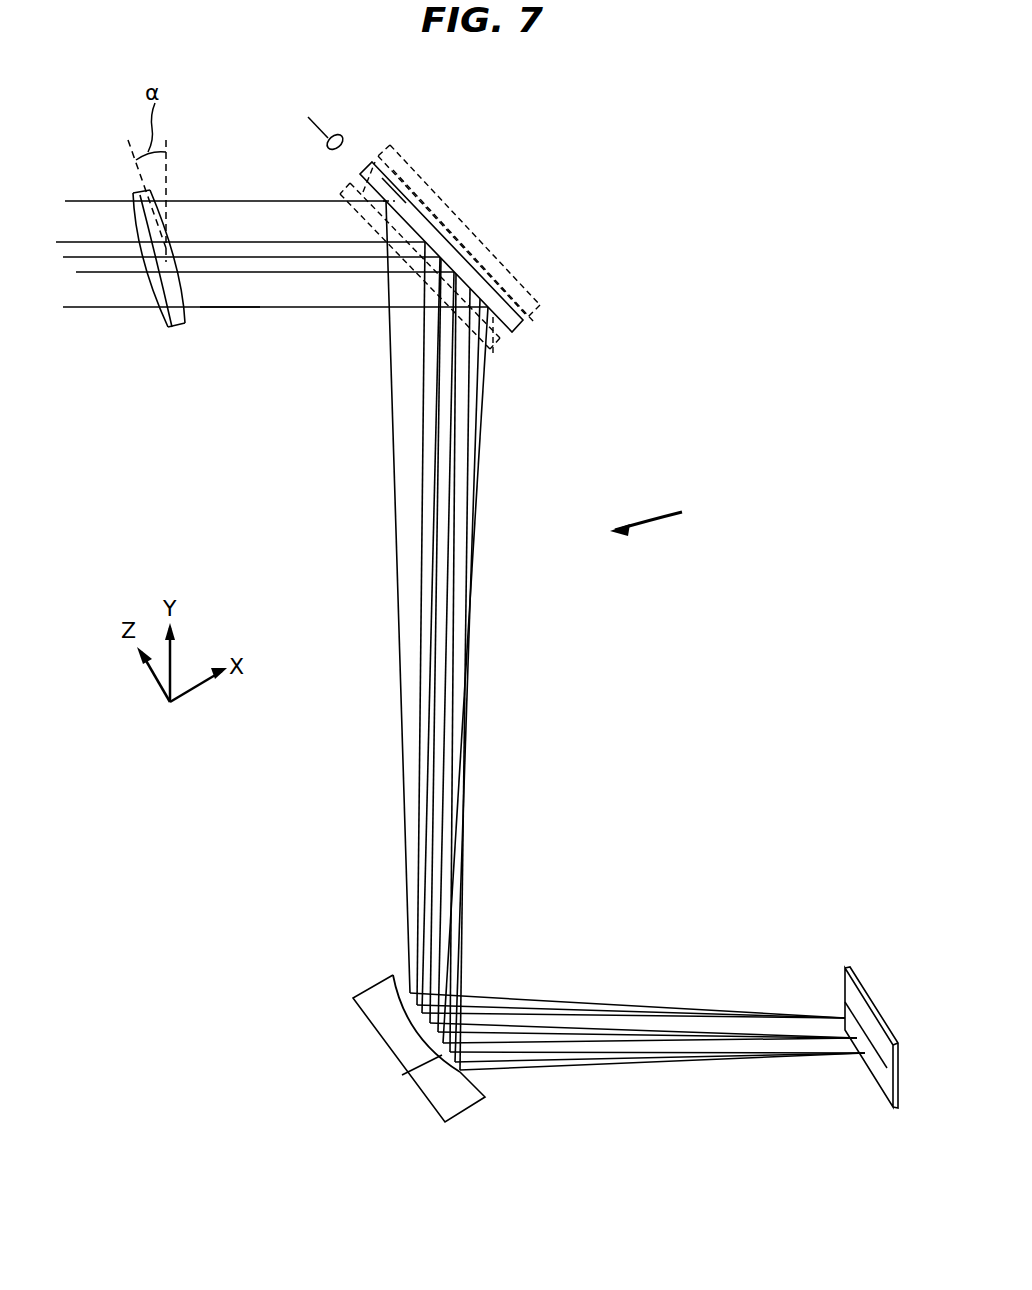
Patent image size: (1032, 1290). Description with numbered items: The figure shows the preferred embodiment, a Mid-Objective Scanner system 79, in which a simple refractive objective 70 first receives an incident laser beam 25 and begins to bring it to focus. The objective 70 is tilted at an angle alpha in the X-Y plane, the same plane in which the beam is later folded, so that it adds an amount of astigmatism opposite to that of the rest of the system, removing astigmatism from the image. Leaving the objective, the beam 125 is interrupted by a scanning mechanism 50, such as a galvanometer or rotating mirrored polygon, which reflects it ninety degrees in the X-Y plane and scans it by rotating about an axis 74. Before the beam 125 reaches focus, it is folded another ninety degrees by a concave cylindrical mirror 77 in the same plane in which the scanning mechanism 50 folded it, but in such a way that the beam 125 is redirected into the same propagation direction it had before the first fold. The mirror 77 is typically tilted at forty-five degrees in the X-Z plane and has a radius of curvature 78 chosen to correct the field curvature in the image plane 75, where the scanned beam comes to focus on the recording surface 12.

The incident laser beam 25 is at (100, 308).
The laser beam 125 is at (253, 305).
The refractive objective 70 is at (173, 328).
The axis 74 is at (308, 117).
The scanning mechanism 50 is at (520, 330).
The Mid-Objective Scanner system 79 is at (718, 509).
The concave cylindrical mirror 77 is at (473, 1107).
The radius of curvature 78 is at (407, 987).
The recording medium 12 is at (845, 990).
The image plane 75 is at (885, 1065).